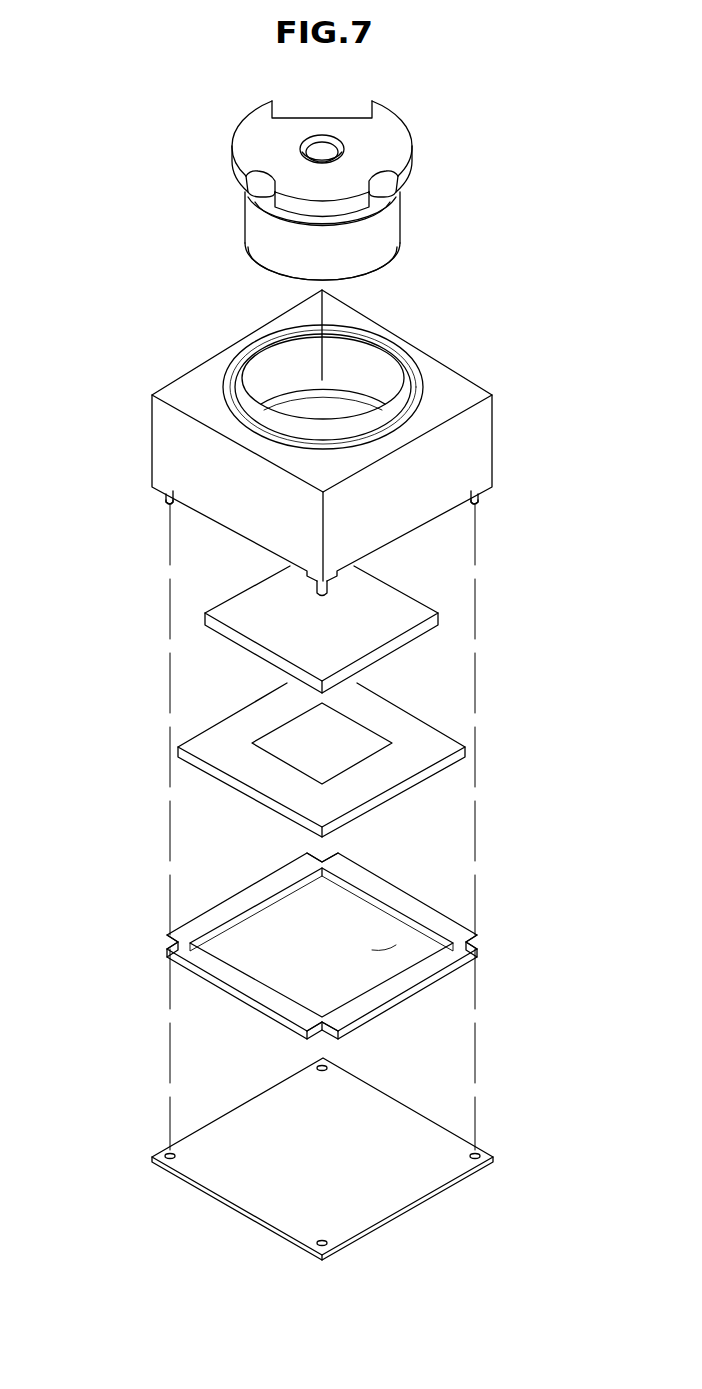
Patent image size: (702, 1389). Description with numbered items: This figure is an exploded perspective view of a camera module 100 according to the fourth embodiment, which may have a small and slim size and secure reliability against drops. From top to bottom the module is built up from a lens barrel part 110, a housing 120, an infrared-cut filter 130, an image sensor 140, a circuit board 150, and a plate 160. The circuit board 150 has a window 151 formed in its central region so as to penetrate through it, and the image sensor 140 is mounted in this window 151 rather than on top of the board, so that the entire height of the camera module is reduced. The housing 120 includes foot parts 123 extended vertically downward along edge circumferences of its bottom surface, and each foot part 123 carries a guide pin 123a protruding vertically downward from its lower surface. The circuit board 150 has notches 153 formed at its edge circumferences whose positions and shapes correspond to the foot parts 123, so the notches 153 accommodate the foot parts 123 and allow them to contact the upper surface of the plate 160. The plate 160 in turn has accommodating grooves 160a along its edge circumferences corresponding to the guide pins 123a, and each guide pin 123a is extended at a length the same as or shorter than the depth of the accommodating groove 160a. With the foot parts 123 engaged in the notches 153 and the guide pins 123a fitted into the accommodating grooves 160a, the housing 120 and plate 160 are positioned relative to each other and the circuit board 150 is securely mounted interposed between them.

The camera module 100 is at (128, 131).
The lens barrel part 110 is at (400, 152).
The housing 120 is at (477, 452).
The foot part 123 is at (157, 493).
The guide pin 123a is at (167, 505).
The infrared-cut filter 130 is at (398, 609).
The image sensor 140 is at (436, 742).
The circuit board 150 is at (394, 897).
The window 151 is at (392, 946).
The notch 153 is at (480, 946).
The plate 160 is at (456, 1149).
The accommodating groove 160a is at (484, 1157).